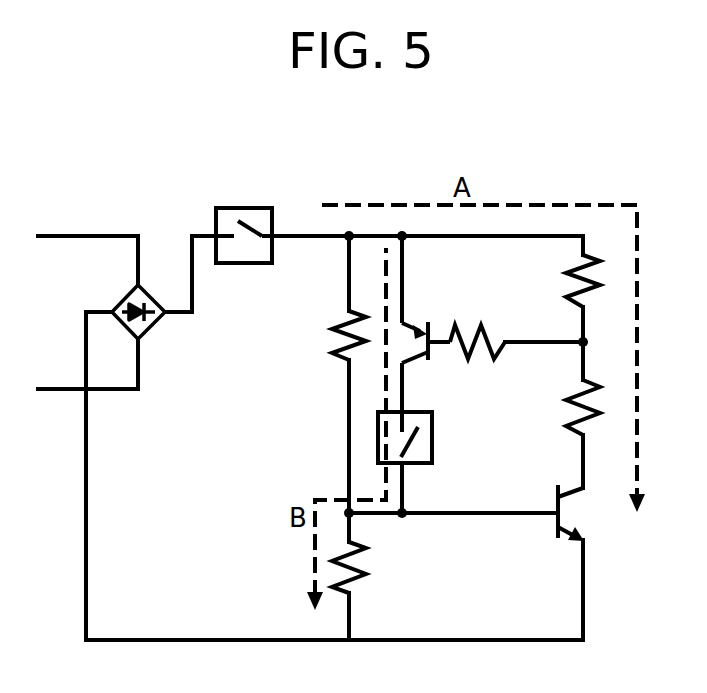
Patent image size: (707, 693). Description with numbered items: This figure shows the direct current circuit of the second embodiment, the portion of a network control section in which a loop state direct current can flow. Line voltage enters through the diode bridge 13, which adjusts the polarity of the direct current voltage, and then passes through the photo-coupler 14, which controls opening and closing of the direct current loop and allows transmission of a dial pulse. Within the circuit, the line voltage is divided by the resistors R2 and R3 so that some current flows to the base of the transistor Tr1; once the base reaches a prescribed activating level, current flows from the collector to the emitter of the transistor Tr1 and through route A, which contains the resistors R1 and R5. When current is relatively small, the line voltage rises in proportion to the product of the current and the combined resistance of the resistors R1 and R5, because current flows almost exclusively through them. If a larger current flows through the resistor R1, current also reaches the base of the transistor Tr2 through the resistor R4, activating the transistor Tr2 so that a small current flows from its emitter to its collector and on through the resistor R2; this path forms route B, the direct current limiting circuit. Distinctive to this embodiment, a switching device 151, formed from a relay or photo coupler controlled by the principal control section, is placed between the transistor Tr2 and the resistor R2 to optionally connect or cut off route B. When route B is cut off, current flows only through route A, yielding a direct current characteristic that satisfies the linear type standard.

The diode bridge 13 is at (143, 338).
The photo-coupler 14 is at (248, 208).
The switching device 151 is at (432, 460).
The resistor R1 is at (570, 300).
The resistor R2 is at (360, 545).
The resistor R3 is at (337, 325).
The resistor R4 is at (476, 355).
The resistor R5 is at (572, 398).
The transistor Tr1 is at (555, 525).
The transistor Tr2 is at (414, 362).